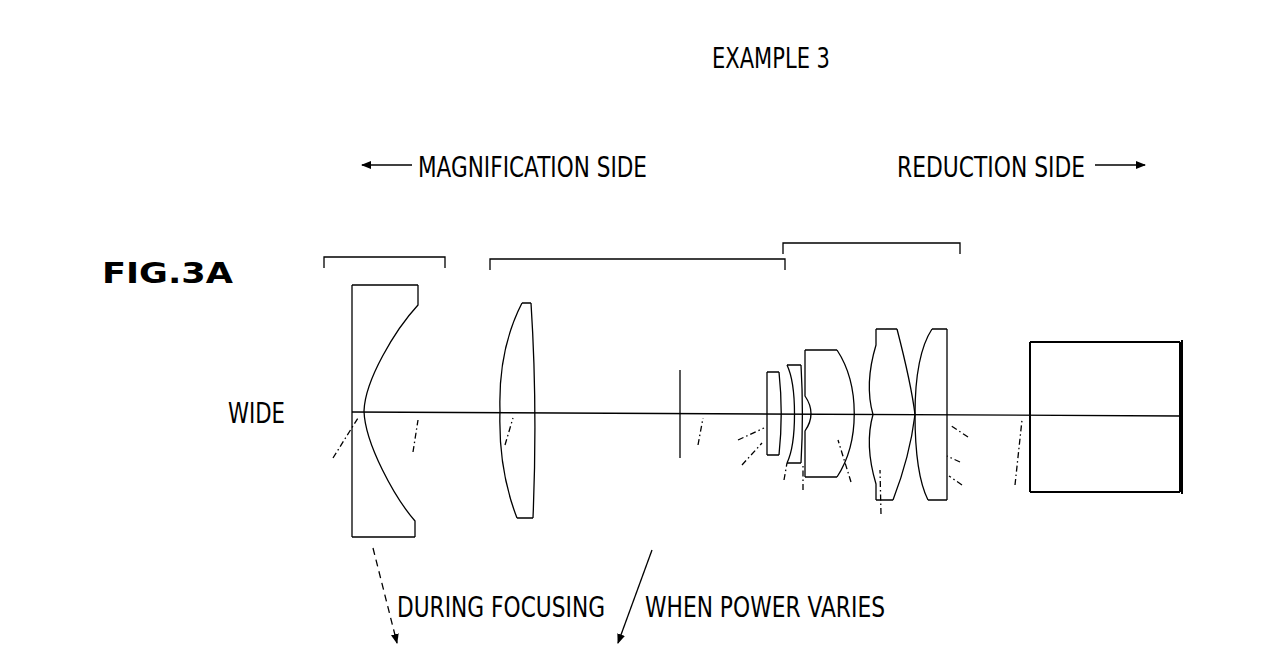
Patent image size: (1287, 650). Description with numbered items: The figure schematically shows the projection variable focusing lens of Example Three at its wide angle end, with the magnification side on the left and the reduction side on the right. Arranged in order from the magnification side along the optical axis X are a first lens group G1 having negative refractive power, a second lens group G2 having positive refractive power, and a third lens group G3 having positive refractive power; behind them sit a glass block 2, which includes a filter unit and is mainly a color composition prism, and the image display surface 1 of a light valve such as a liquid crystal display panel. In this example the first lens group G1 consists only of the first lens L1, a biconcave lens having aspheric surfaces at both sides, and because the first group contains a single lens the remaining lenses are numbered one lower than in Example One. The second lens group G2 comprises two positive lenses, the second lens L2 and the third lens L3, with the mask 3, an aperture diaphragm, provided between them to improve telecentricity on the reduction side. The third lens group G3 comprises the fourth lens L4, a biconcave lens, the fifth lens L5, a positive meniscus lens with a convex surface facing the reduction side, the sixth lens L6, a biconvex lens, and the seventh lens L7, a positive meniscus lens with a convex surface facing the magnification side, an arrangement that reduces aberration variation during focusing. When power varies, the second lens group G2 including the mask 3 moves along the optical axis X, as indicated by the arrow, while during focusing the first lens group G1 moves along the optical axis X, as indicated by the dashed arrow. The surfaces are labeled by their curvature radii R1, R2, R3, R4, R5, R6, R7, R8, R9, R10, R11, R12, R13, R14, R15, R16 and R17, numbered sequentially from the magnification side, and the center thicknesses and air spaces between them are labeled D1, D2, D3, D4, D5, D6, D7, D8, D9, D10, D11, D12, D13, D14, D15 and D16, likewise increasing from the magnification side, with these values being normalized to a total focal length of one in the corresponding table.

The image display surface 1 is at (1183, 460).
The glass block 2 is at (1109, 428).
The mask 3 is at (664, 420).
The first lens group G1 is at (384, 247).
The second lens group G2 is at (637, 249).
The third lens group G3 is at (871, 232).
The first lens L1 is at (385, 433).
The second lens L2 is at (523, 437).
The third lens L3 is at (743, 425).
The fourth lens L4 is at (792, 420).
The fifth lens L5 is at (838, 425).
The sixth lens L6 is at (901, 407).
The seventh lens L7 is at (961, 418).
The optical axis X is at (411, 449).
The lens surface curvature radius R1 is at (352, 402).
The lens surface curvature radius R2 is at (366, 400).
The lens surface curvature radius R3 is at (499, 400).
The lens surface curvature radius R4 is at (536, 402).
The lens surface curvature radius R5 is at (680, 380).
The lens surface curvature radius R6 is at (766, 410).
The lens surface curvature radius R7 is at (779, 396).
The lens surface curvature radius R8 is at (789, 388).
The lens surface curvature radius R9 is at (800, 372).
The lens surface curvature radius R10 is at (808, 372).
The lens surface curvature radius R11 is at (853, 398).
The lens surface curvature radius R12 is at (873, 370).
The lens surface curvature radius R13 is at (911, 395).
The lens surface curvature radius R14 is at (917, 368).
The lens surface curvature radius R15 is at (947, 400).
The lens surface curvature radius R16 is at (1030, 366).
The lens surface curvature radius R17 is at (1200, 378).
The center thickness or air space D1 is at (336, 452).
The center thickness or air space D2 is at (461, 433).
The center thickness or air space D3 is at (490, 449).
The center thickness or air space D4 is at (593, 437).
The center thickness or air space D5 is at (695, 452).
The center thickness or air space D6 is at (738, 438).
The center thickness or air space D7 is at (770, 456).
The center thickness or air space D8 is at (778, 486).
The center thickness or air space D9 is at (794, 470).
The center thickness or air space D10 is at (846, 532).
The center thickness or air space D11 is at (902, 490).
The center thickness or air space D12 is at (974, 488).
The center thickness or air space D13 is at (973, 462).
The center thickness or air space D14 is at (978, 433).
The center thickness or air space D15 is at (1026, 469).
The center thickness or air space D16 is at (1120, 437).